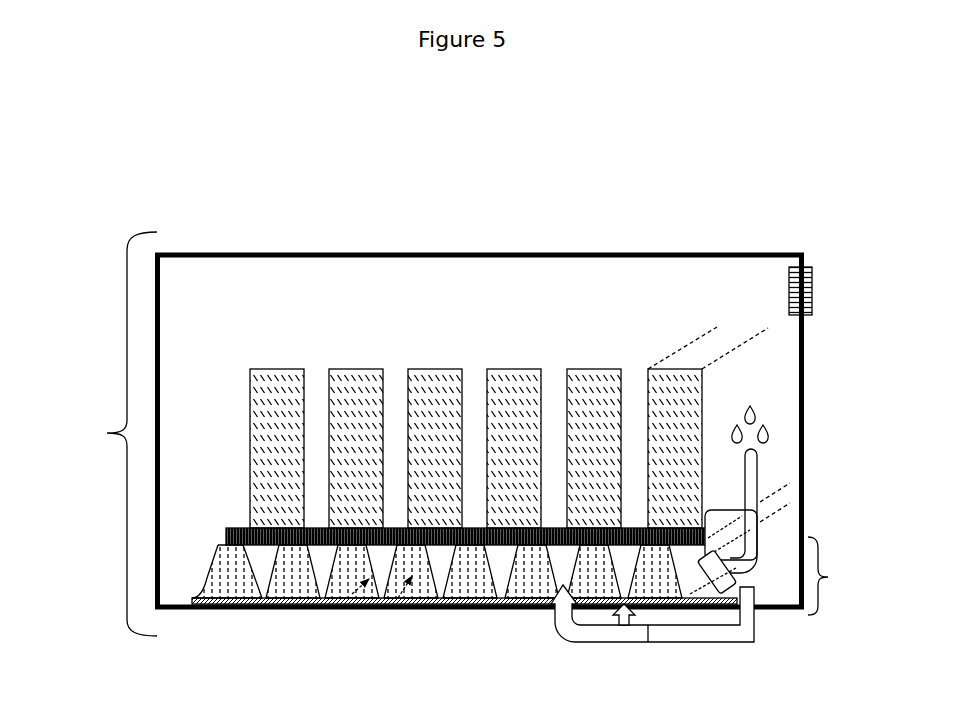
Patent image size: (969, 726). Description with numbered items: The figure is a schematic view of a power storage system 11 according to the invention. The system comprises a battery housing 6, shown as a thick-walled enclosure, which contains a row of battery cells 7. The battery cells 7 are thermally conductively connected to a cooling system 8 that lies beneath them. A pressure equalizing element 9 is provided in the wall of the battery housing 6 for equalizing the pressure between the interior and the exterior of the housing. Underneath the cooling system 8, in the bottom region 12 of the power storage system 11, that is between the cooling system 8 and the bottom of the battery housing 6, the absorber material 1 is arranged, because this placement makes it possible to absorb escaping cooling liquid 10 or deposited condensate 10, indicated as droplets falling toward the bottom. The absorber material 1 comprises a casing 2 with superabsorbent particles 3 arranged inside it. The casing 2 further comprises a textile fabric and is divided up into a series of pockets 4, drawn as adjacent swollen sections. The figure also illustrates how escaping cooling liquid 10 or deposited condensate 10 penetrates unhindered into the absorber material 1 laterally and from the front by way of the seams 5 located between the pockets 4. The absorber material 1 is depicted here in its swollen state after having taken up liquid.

The absorber material 1 is at (260, 569).
The casing 2 is at (337, 604).
The superabsorbent particles 3 is at (398, 600).
The pockets 4 is at (762, 553).
The seams 5 is at (496, 605).
The battery housing 6 is at (480, 419).
The battery cells 7 is at (509, 427).
The cooling system 8 is at (475, 529).
The pressure equalizing element 9 is at (822, 291).
The cooling liquid or condensate 10 is at (757, 398).
The power storage system 11 is at (107, 433).
The bottom region 12 is at (828, 577).